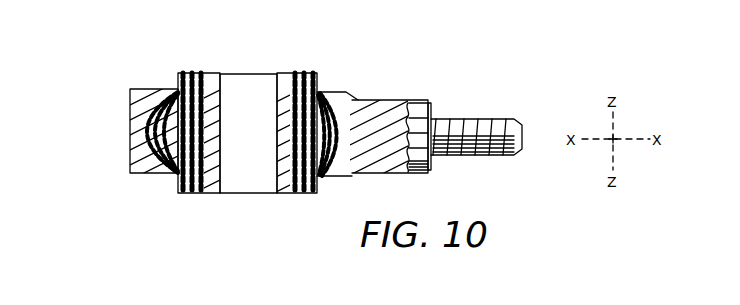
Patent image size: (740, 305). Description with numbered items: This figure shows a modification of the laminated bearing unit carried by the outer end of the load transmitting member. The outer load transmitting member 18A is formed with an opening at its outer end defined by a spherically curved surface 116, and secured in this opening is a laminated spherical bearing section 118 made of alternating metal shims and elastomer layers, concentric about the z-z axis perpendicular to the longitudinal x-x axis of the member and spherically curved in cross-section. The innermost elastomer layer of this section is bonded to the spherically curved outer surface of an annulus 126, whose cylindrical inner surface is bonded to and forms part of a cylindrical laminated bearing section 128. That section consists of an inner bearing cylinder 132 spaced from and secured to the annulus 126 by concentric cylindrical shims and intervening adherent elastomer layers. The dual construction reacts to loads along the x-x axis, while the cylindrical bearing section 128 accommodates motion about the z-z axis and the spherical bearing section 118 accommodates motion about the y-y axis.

The outer load transmitting member 18A is at (130, 122).
The annulus 126 is at (177, 93).
The cylindrical laminated bearing section 128 is at (156, 175).
The inner bearing cylinder 132 is at (215, 194).
The laminated spherical bearing section 118 is at (330, 92).
The spherically curved surface 116 is at (360, 100).